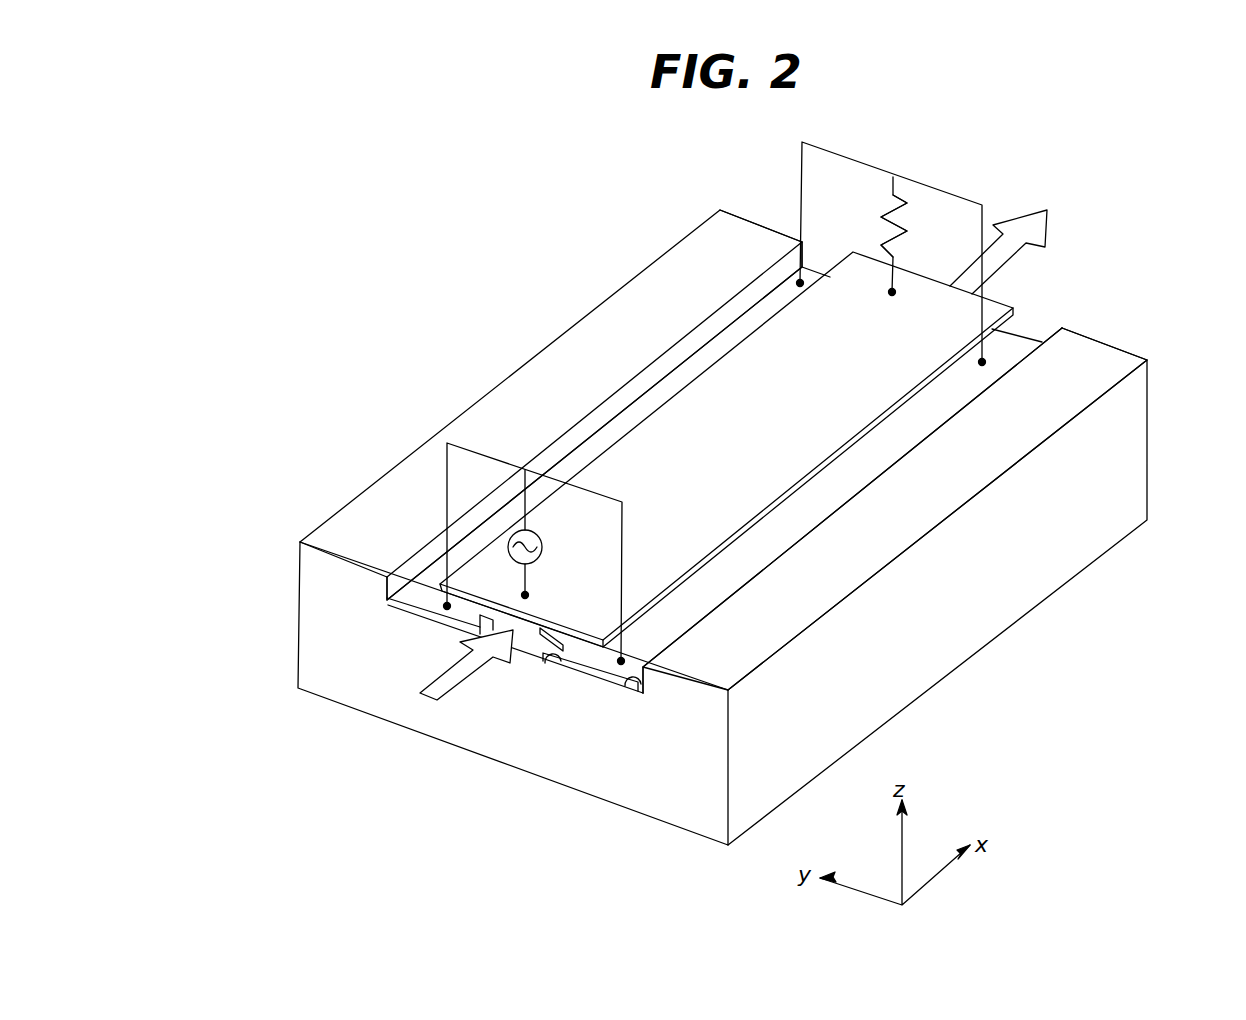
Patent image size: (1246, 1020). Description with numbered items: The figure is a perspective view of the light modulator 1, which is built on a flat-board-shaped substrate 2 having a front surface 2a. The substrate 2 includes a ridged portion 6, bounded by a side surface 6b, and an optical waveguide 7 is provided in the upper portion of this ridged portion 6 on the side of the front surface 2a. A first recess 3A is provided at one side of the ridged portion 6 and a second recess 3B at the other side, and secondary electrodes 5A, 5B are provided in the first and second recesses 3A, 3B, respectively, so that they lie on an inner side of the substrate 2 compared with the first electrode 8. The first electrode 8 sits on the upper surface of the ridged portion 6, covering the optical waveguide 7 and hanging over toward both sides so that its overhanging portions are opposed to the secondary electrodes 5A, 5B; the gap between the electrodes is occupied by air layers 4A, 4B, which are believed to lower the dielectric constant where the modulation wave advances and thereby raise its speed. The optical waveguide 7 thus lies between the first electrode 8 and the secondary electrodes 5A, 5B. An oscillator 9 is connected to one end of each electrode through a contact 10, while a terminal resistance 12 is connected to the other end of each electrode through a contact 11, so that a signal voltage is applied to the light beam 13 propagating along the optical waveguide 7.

The light modulator 1 is at (1104, 288).
The substrate 2 is at (1060, 557).
The front surface 2a is at (1100, 350).
The first recess 3A is at (412, 566).
The second recess 3B is at (627, 690).
The air layer 4A is at (630, 397).
The air layer 4B is at (1017, 340).
The secondary electrode 5A is at (727, 337).
The secondary electrode 5B is at (943, 398).
The ridged portion 6 is at (520, 645).
The side surface 6b is at (552, 660).
The optical waveguide 7 is at (470, 625).
The first electrode 8 is at (845, 272).
The oscillator 9 is at (543, 545).
The contact 10 is at (525, 595).
The contact 11 is at (785, 290).
The terminal resistance 12 is at (930, 182).
The light beam 13 is at (420, 693).